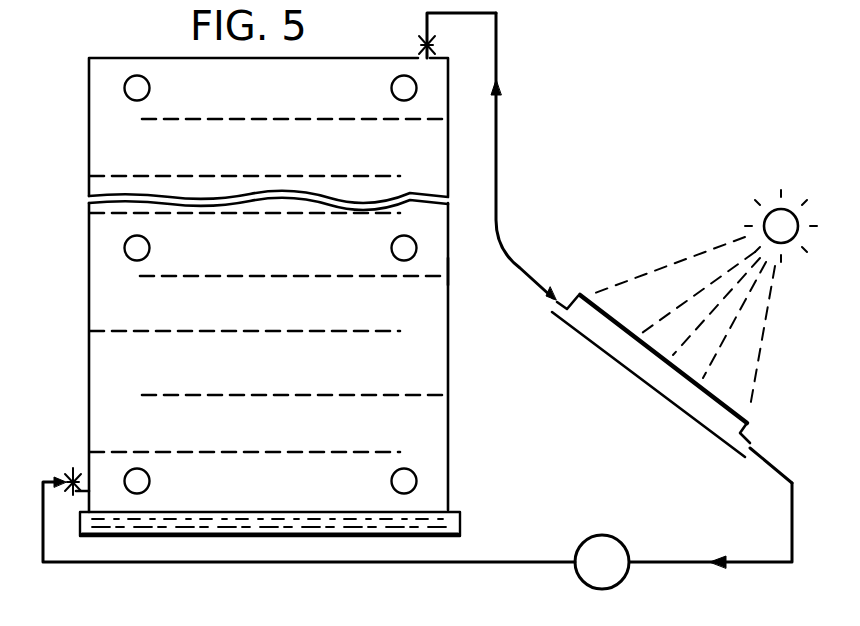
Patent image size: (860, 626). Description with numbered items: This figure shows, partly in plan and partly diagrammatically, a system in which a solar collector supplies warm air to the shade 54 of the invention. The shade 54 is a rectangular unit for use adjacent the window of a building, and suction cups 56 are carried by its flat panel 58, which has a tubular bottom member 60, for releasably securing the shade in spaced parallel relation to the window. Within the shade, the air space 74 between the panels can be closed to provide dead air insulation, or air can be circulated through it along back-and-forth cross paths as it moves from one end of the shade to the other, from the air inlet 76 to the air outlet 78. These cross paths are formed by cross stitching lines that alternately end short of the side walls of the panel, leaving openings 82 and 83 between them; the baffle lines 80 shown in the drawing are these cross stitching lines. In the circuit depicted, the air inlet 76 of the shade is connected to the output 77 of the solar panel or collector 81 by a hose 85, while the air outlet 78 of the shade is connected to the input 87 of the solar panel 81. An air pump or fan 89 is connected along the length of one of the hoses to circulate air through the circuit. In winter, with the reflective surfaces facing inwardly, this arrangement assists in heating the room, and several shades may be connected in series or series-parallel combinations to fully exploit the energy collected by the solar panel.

The shade 54 is at (88, 263).
The suction cups 56 is at (140, 77).
The flat panel 58 is at (437, 268).
The tubular bottom member 60 is at (458, 528).
The air space 74 is at (121, 300).
The air inlet 76 is at (73, 468).
The air outlet 78 is at (420, 48).
The baffle 80 is at (425, 395).
The openings 82 is at (415, 452).
The openings 83 is at (121, 396).
The hose 85 is at (743, 557).
The input of the solar panel 87 is at (567, 292).
The air pump or fan 89 is at (612, 544).
The output of the solar panel 77 is at (752, 437).
The solar panel or collector 81 is at (608, 313).